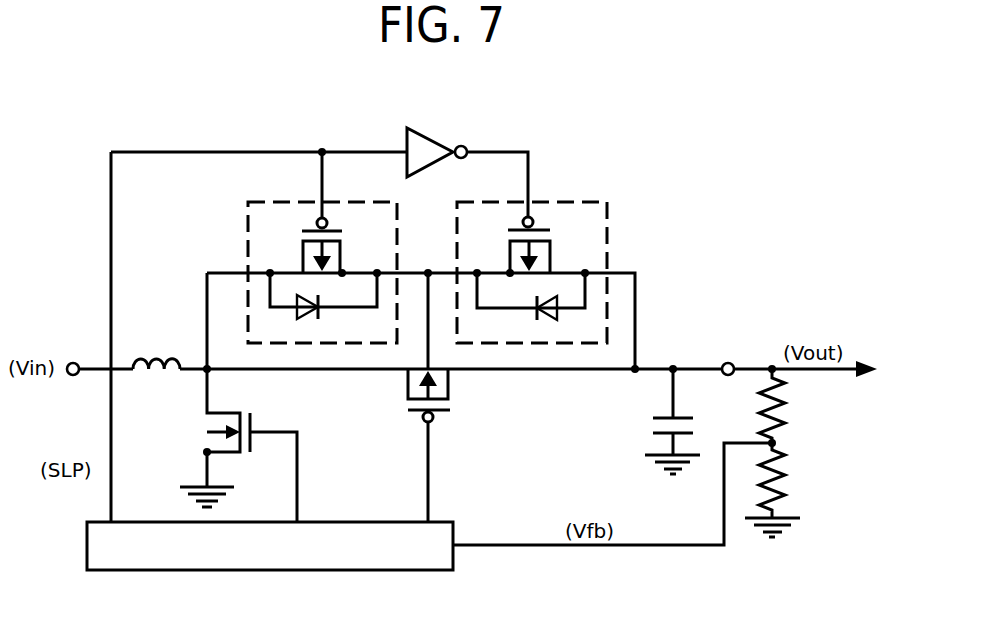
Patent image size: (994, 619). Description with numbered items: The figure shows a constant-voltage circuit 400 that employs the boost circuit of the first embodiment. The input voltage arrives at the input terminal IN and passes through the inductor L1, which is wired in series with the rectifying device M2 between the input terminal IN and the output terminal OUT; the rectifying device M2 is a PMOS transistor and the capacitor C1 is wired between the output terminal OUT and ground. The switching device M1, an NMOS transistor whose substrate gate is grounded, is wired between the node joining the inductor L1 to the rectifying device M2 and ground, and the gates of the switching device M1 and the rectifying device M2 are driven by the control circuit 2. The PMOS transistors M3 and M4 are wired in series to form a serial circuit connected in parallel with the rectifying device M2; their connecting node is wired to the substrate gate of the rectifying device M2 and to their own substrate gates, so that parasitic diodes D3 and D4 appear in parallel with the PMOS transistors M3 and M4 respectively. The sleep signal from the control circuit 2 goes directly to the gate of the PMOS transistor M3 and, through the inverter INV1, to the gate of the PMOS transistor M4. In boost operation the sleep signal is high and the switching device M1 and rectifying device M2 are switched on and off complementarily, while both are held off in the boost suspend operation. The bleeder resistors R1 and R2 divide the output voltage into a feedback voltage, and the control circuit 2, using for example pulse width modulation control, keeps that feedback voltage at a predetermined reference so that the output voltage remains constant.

The constant-voltage circuit 400 is at (658, 152).
The control circuit 2 is at (356, 522).
The switching device M1 is at (238, 445).
The rectifying device M2 is at (446, 445).
The PMOS transistor M3 is at (232, 236).
The PMOS transistor M4 is at (628, 238).
The parasitic diode D3 is at (323, 301).
The parasitic diode D4 is at (506, 303).
The inverter INV1 is at (448, 113).
The inductor L1 is at (156, 346).
The capacitor C1 is at (676, 421).
The bleeder resistor R1 is at (791, 406).
The bleeder resistor R2 is at (784, 490).
The input terminal IN is at (76, 361).
The output terminal OUT is at (732, 361).